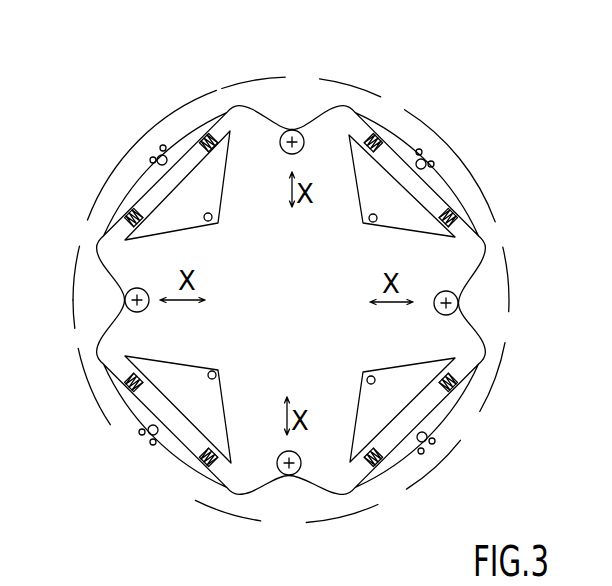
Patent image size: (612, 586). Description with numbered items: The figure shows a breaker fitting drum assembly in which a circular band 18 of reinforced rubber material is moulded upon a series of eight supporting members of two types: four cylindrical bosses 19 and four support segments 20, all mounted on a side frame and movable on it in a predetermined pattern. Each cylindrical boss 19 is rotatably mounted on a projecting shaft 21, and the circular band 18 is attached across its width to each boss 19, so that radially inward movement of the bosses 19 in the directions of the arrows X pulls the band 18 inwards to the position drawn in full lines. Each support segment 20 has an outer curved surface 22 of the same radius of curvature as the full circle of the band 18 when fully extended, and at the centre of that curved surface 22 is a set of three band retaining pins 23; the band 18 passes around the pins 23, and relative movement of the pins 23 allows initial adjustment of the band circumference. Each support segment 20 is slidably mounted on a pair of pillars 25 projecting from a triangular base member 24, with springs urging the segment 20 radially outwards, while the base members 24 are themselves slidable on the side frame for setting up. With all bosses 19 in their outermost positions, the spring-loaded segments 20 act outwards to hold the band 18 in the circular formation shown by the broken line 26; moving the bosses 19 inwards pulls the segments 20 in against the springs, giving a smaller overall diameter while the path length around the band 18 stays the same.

The circular band 18 is at (483, 245).
The cylindrical boss 19 is at (306, 134).
The support segment 20 is at (185, 138).
The projecting shaft 21 is at (287, 127).
The outer curved surface 22 is at (120, 190).
The band retaining pin 23 is at (151, 157).
The triangular base member 24 is at (215, 197).
The pillar 25 is at (485, 358).
The broken line 26 is at (380, 503).